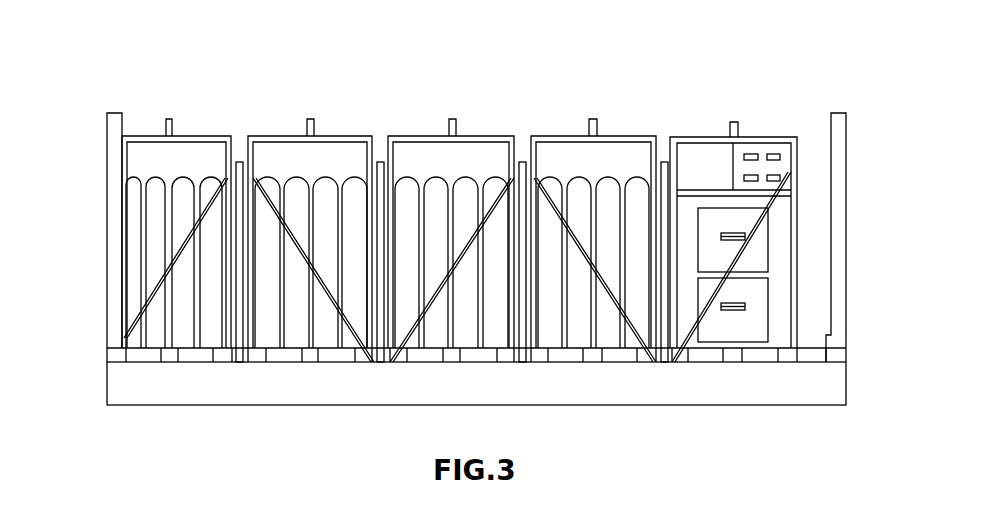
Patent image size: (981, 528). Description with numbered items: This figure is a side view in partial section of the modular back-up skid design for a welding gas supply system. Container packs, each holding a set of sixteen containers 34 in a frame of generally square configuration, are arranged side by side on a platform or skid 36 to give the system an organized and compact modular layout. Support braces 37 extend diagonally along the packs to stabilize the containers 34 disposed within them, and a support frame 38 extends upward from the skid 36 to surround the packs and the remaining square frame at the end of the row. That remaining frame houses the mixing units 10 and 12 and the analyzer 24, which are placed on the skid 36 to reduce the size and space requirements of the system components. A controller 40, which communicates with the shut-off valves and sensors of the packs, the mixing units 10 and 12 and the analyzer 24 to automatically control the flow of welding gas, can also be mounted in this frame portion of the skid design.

The mixing unit 10 is at (757, 257).
The mixing unit 12 is at (758, 292).
The analyzer 24 is at (688, 152).
The container 34 is at (155, 219).
The skid 36 is at (763, 400).
The support brace 37 is at (331, 292).
The support frame 38 is at (837, 178).
The controller 40 is at (762, 150).